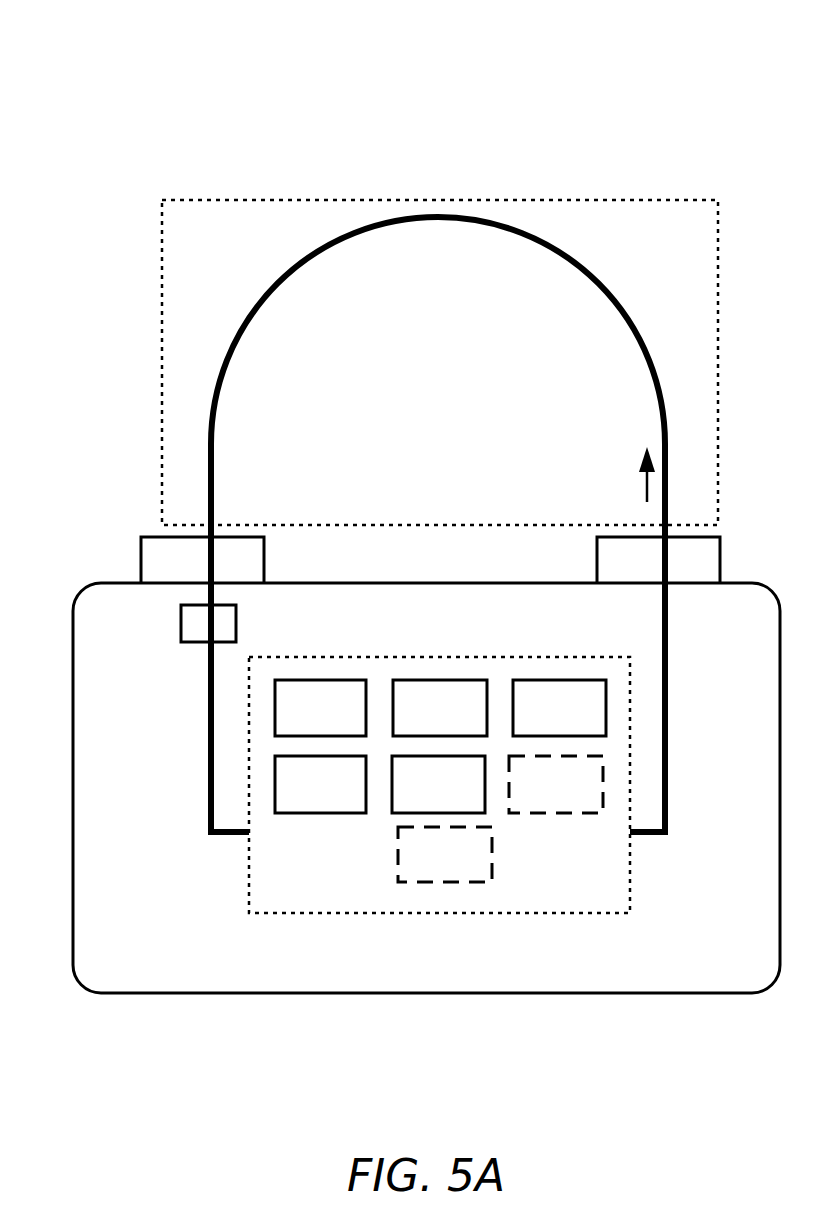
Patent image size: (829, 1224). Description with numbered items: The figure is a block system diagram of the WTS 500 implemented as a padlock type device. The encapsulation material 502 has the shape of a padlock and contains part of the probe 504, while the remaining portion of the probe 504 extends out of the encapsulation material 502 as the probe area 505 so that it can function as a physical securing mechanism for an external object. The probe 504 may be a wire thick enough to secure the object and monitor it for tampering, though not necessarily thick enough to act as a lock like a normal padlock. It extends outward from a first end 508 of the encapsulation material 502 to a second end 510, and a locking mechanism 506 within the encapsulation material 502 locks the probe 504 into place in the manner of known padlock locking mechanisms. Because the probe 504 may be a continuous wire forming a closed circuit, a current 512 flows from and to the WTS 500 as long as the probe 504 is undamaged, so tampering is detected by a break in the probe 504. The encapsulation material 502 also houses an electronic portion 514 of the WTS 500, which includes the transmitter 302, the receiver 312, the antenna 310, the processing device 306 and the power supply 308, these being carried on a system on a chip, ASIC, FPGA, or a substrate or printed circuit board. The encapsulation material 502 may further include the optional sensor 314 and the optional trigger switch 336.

The WTS 500 is at (585, 66).
The encapsulation material 502 is at (426, 788).
The probe 504 is at (623, 325).
The probe area 505 is at (440, 362).
The locking mechanism 506 is at (180, 625).
The first end 508 is at (700, 548).
The second end 510 is at (148, 552).
The current 512 is at (641, 478).
The electronic portion 514 is at (439, 785).
The transmitter 302 is at (320, 708).
The processing device 306 is at (440, 708).
The power supply 308 is at (559, 708).
The antenna 310 is at (320, 784).
The receiver 312 is at (438, 784).
The optional sensor 314 is at (556, 784).
The optional trigger switch 336 is at (445, 854).